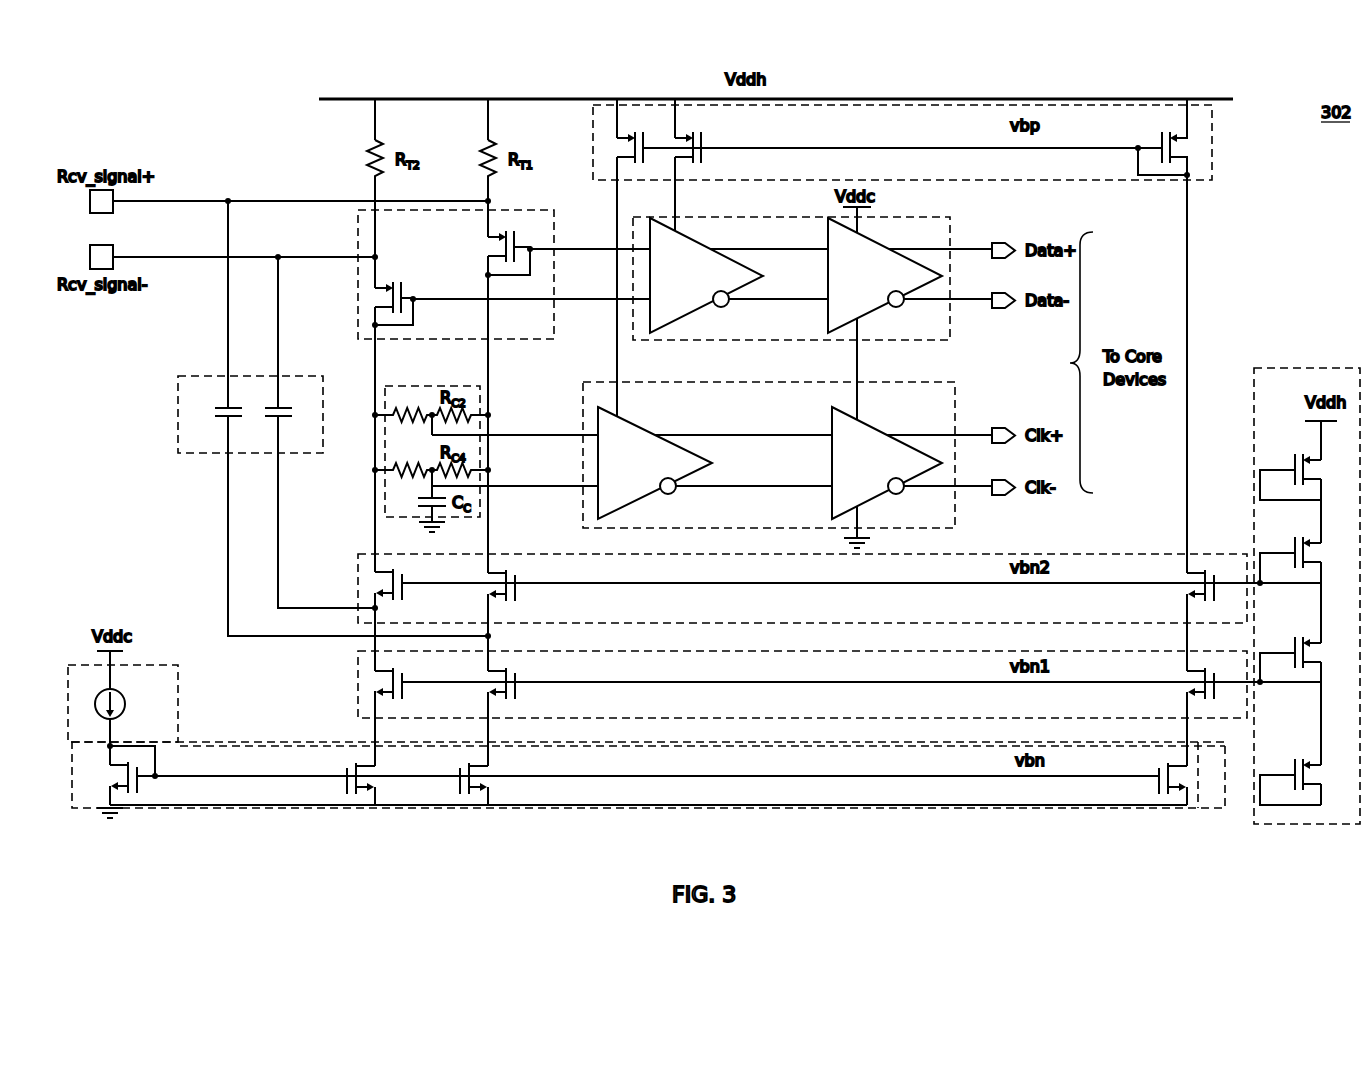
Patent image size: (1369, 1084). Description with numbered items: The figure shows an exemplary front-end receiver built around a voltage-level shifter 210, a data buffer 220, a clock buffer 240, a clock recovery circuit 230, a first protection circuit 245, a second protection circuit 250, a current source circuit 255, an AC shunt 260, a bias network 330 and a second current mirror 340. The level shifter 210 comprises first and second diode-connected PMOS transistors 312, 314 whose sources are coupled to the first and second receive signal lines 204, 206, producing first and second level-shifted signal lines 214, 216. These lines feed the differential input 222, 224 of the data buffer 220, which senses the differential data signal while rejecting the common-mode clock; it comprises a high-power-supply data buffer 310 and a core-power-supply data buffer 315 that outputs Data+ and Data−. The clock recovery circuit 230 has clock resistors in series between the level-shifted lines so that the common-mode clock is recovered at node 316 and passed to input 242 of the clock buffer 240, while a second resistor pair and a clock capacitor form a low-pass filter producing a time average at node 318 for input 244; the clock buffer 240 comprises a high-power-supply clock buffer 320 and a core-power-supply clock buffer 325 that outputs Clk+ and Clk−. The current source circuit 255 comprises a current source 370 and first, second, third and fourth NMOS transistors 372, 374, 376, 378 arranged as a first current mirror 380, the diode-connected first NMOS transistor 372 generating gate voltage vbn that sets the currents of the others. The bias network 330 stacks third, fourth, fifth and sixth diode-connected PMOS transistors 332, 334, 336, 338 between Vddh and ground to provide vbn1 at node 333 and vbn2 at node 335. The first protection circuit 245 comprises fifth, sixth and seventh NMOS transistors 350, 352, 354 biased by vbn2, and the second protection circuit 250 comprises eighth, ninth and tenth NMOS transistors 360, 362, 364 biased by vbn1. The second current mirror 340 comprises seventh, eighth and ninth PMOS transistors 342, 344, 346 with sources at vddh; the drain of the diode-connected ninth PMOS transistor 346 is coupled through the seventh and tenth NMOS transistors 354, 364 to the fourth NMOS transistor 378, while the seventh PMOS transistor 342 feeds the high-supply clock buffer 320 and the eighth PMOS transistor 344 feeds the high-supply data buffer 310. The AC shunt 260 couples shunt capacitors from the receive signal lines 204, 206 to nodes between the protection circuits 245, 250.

The first receive signal line 204 is at (152, 201).
The second receive signal line 206 is at (152, 257).
The voltage-level shifter 210 is at (500, 210).
The first level-shifted signal line 214 is at (490, 345).
The second level-shifted signal line 216 is at (372, 345).
The data buffer 220 is at (930, 217).
The differential input of the data buffer 222 is at (612, 248).
The differential input of the data buffer 224 is at (612, 298).
The clock recovery circuit 230 is at (412, 386).
The clock buffer 240 is at (936, 382).
The input of the clock buffer 242 is at (582, 435).
The input of the clock buffer 244 is at (582, 486).
The first protection circuit 245 is at (503, 554).
The second protection circuit 250 is at (503, 650).
The current source circuit 255 is at (220, 742).
The AC shunt 260 is at (296, 376).
The high-power-supply data buffer 310 is at (692, 241).
The first diode-connected PMOS transistor 312 is at (512, 244).
The second diode-connected PMOS transistor 314 is at (402, 292).
The core-power-supply data buffer 315 is at (872, 241).
The node between the first and second clock resistors 316 is at (430, 420).
The node between the third and fourth clock resistors 318 is at (430, 475).
The high-power-supply clock buffer 320 is at (638, 421).
The core-power-supply clock buffer 325 is at (874, 421).
The bias network 330 is at (1285, 368).
The third diode-connected PMOS transistor 332 is at (1292, 769).
The node 333 is at (1262, 685).
The fourth diode-connected PMOS transistor 334 is at (1292, 647).
The node 335 is at (1262, 586).
The fifth diode-connected PMOS transistor 336 is at (1292, 547).
The sixth diode-connected PMOS transistor 338 is at (1292, 464).
The second current mirror 340 is at (1200, 183).
The seventh PMOS transistor 342 is at (648, 140).
The eighth PMOS transistor 344 is at (706, 140).
The ninth PMOS transistor 346 is at (1167, 140).
The fifth NMOS transistor 350 is at (404, 582).
The sixth NMOS transistor 352 is at (516, 582).
The seventh NMOS transistor 354 is at (1215, 582).
The eighth NMOS transistor 360 is at (404, 681).
The ninth NMOS transistor 362 is at (516, 681).
The tenth NMOS transistor 364 is at (1215, 681).
The current source 370 is at (126, 712).
The first NMOS transistor 372 is at (112, 779).
The second NMOS transistor 374 is at (346, 770).
The third NMOS transistor 376 is at (459, 770).
The fourth NMOS transistor 378 is at (1158, 770).
The first current mirror 380 is at (118, 745).